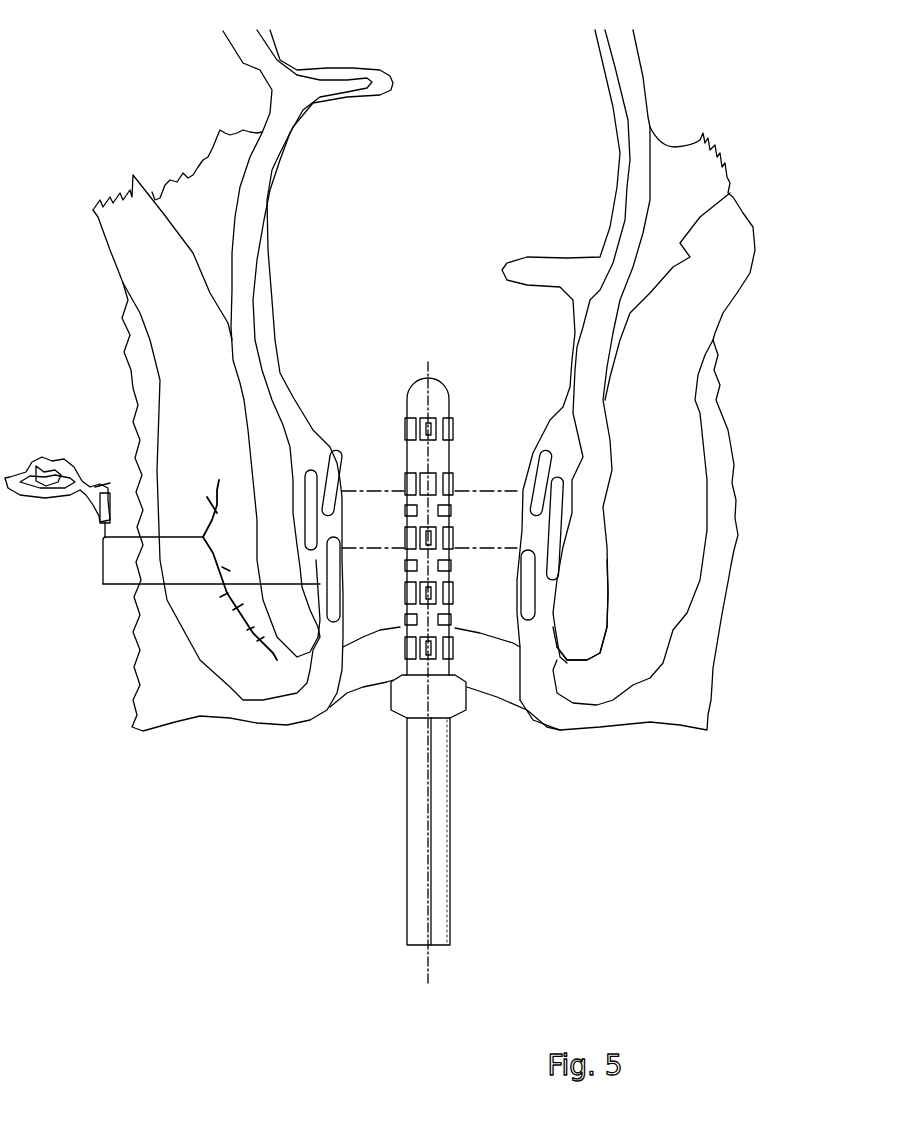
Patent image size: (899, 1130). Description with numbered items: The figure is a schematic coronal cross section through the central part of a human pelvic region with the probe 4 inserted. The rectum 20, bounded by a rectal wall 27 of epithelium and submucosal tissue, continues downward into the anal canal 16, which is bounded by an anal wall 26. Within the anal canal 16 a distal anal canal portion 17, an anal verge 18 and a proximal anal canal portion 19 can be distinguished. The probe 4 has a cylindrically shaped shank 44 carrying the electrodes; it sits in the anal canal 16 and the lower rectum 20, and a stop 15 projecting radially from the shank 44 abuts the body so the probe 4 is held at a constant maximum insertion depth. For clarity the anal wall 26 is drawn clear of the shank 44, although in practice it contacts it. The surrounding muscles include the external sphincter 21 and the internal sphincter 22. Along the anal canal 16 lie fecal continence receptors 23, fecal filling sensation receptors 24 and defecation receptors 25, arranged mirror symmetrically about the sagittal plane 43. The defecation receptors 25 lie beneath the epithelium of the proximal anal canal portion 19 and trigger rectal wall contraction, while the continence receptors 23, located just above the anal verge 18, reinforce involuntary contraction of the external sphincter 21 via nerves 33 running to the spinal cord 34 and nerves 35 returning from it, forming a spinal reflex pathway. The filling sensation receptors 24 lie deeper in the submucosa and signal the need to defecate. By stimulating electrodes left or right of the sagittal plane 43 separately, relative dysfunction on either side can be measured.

The probe 4 is at (406, 372).
The shank 44 is at (405, 457).
The sagittal plane 43 is at (432, 968).
The stop 15 is at (448, 706).
The anal verge 18 is at (370, 688).
The distal anal canal portion 17 is at (476, 676).
The anal canal 16 is at (470, 621).
The proximal anal canal portion 19 is at (357, 531).
The rectum 20 is at (487, 366).
The rectal wall 27 is at (556, 422).
The defecation receptors 25 is at (322, 455).
The fecal filling sensation receptors 24 is at (306, 478).
The anal wall 26 is at (519, 588).
The fecal continence receptors 23 is at (322, 628).
The internal sphincter 22 is at (568, 635).
The external sphincter 21 is at (602, 670).
The nerves extending to the spinal cord 33 is at (123, 587).
The spinal cord 34 is at (50, 458).
The nerves extending from the spinal cord 35 is at (143, 537).